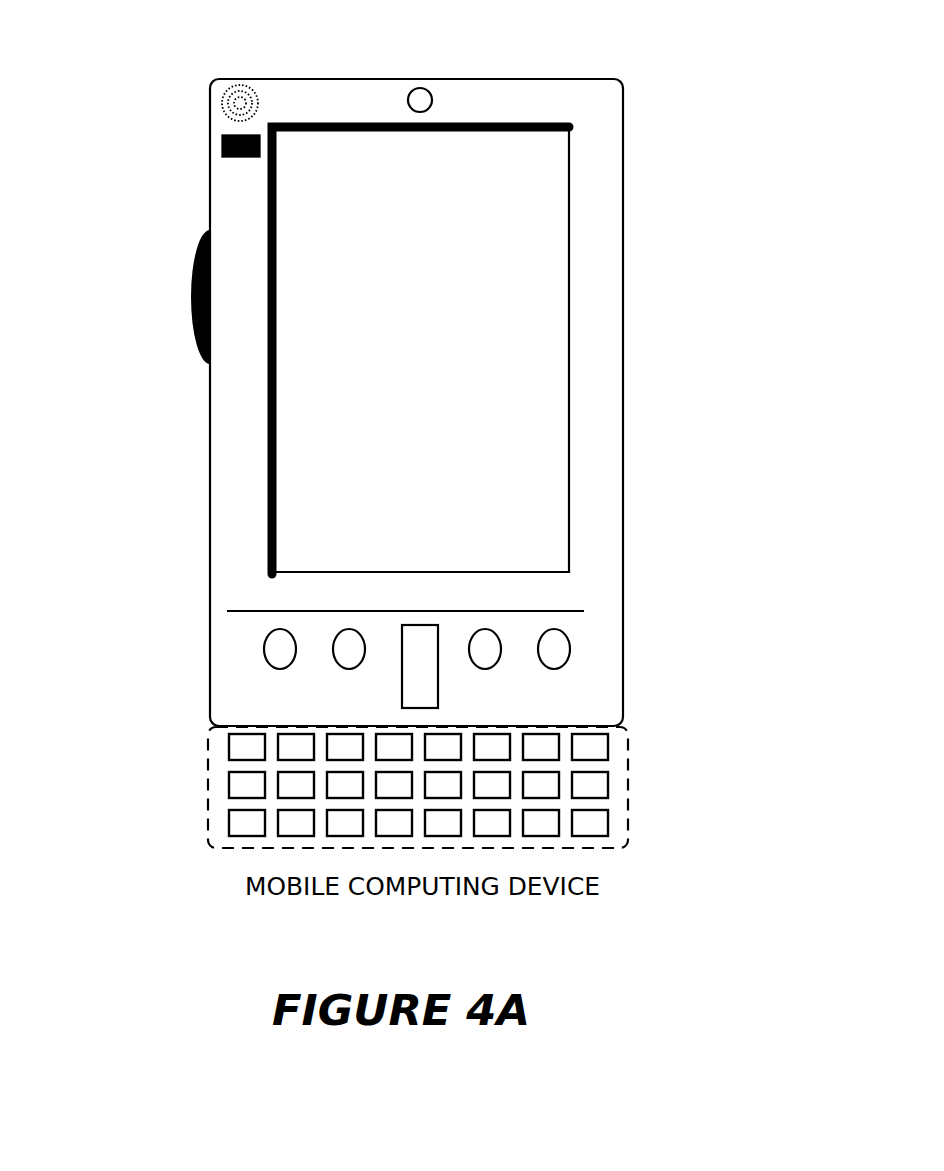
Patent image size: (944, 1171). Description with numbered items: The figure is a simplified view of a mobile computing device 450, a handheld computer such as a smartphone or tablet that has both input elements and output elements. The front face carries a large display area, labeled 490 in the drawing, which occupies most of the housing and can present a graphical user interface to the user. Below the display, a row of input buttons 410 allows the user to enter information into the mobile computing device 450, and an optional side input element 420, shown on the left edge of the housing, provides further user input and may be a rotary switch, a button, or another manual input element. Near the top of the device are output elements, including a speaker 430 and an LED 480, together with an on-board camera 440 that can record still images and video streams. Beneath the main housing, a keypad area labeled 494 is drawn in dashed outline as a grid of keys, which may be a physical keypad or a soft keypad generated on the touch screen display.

The input buttons 410 is at (557, 661).
The side input element 420 is at (188, 306).
The speaker 430 is at (222, 92).
The on-board camera 440 is at (430, 100).
The mobile computing device 450 is at (624, 97).
The LED 480 is at (222, 137).
The display screen 490 is at (296, 509).
The keyboard 494 is at (207, 815).